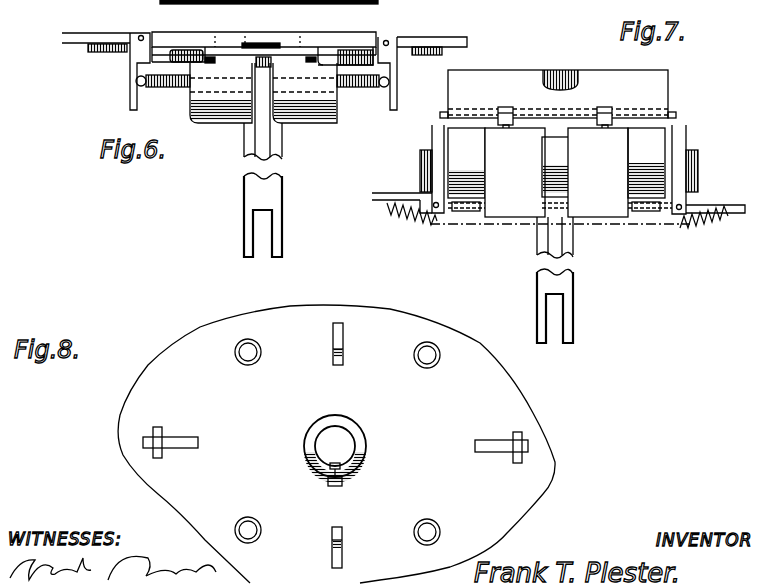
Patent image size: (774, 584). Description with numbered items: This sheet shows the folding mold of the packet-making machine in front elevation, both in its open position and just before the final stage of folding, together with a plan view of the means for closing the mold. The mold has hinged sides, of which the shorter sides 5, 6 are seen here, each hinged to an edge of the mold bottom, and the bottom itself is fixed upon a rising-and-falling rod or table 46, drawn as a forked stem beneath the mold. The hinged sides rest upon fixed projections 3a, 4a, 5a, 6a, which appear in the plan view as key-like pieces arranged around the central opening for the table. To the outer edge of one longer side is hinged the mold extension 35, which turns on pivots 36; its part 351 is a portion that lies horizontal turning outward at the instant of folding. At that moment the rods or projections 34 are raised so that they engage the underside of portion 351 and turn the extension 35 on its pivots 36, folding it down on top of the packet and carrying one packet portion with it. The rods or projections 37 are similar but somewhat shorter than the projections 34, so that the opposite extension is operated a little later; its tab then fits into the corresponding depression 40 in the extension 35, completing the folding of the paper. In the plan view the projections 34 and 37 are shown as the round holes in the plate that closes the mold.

In FIG. 6, the side 5 is at (92, 34).
In FIG. 7, the side 5 is at (432, 150).
In FIG. 6, the side 6 is at (430, 38).
In FIG. 7, the side 6 is at (690, 136).
In FIG. 6, the mold extension 35 is at (210, 38).
In FIG. 7, the mold extension 35 is at (558, 94).
In FIG. 6, the portion of the mold extension 351 is at (177, 70).
In FIG. 7, the portion of the mold extension 351 is at (478, 116).
In FIG. 6, the depression 40 is at (272, 44).
In FIG. 7, the depression 40 is at (574, 68).
In FIG. 6, the rising-and-falling rod or table 46 is at (284, 150).
In FIG. 7, the rising-and-falling rod or table 46 is at (576, 250).
In FIG. 7, the pivots 36 is at (510, 114).
In FIG. 8, the rods or projections 37 is at (262, 352).
In FIG. 8, the rods or projections 34 is at (262, 530).
In FIG. 8, the fixed projection 3a is at (344, 352).
In FIG. 8, the fixed projection 4a is at (345, 548).
In FIG. 8, the fixed projection 5a is at (190, 448).
In FIG. 8, the fixed projection 6a is at (510, 452).